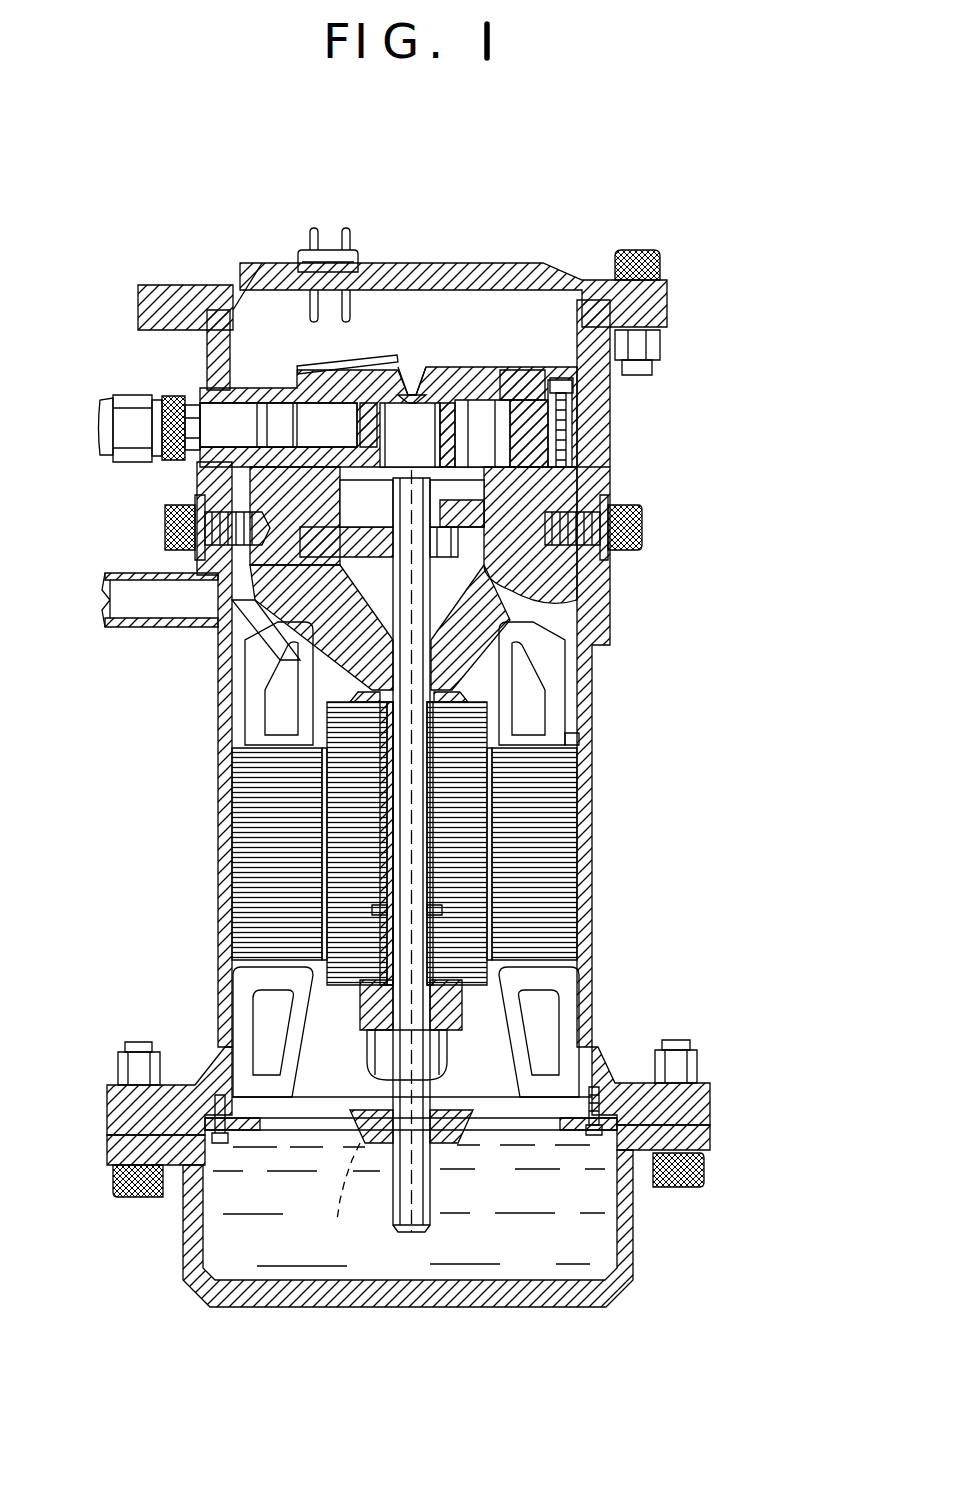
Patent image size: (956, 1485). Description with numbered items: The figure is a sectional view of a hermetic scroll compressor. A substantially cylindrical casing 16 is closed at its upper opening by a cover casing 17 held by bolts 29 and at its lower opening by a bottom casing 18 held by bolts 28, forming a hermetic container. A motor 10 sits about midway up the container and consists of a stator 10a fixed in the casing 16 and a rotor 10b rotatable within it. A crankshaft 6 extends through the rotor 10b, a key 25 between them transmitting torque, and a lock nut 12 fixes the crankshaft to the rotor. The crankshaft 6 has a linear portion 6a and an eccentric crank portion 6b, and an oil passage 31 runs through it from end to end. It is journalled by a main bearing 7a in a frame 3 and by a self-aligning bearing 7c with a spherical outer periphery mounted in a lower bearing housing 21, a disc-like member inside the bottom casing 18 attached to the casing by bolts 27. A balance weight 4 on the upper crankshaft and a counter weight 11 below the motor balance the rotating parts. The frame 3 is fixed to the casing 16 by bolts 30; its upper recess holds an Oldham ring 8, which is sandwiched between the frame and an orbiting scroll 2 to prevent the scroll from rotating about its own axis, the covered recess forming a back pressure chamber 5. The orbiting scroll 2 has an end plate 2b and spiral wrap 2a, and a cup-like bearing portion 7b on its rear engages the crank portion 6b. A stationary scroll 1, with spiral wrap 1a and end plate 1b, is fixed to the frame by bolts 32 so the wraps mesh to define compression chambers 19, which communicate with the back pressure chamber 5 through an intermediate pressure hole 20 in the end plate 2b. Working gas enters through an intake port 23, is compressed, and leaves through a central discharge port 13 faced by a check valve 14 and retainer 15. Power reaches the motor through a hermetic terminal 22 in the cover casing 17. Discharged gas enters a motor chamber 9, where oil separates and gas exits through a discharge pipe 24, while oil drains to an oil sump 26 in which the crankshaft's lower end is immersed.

The stationary scroll 1 is at (596, 192).
The spiral wrap 1a is at (452, 400).
The end plate 1b is at (520, 398).
The orbiting scroll 2 is at (280, 192).
The spiral wrap 2a is at (320, 400).
The end plate 2b is at (250, 403).
The frame 3 is at (320, 617).
The balance weight 4 is at (240, 628).
The back pressure chamber 5 is at (560, 590).
The crankshaft 6 is at (490, 853).
The linear portion 6a is at (490, 758).
The crank portion 6b is at (205, 505).
The main bearing 7a is at (540, 620).
The bearing portion 7b is at (258, 553).
The self-aligning bearing 7c is at (368, 1143).
The Oldham ring 8 is at (610, 466).
The motor chamber 9 is at (280, 698).
The motor 10 is at (125, 790).
The stator 10a is at (250, 798).
The rotor 10b is at (350, 903).
The counter weight 11 is at (540, 998).
The lock nut 12 is at (380, 1053).
The discharge port 13 is at (397, 356).
The check valve 14 is at (434, 400).
The retainer 15 is at (405, 366).
The casing 16 is at (600, 623).
The cover casing 17 is at (185, 285).
The bottom casing 18 is at (630, 1300).
The compression chambers 19 is at (580, 398).
The intermediate pressure hole 20 is at (503, 382).
The lower bearing housing 21 is at (348, 1143).
The hermetic terminal 22 is at (334, 250).
The intake port 23 is at (128, 398).
The discharge pipe 24 is at (105, 598).
The key 25 is at (345, 908).
The oil sump 26 is at (481, 1248).
The bolts 27 is at (592, 1135).
The bolts 28 is at (704, 1168).
The bolts 29 is at (638, 250).
The bolts 30 is at (640, 525).
The oil passage 31 is at (385, 1226).
The bolts 32 is at (565, 428).